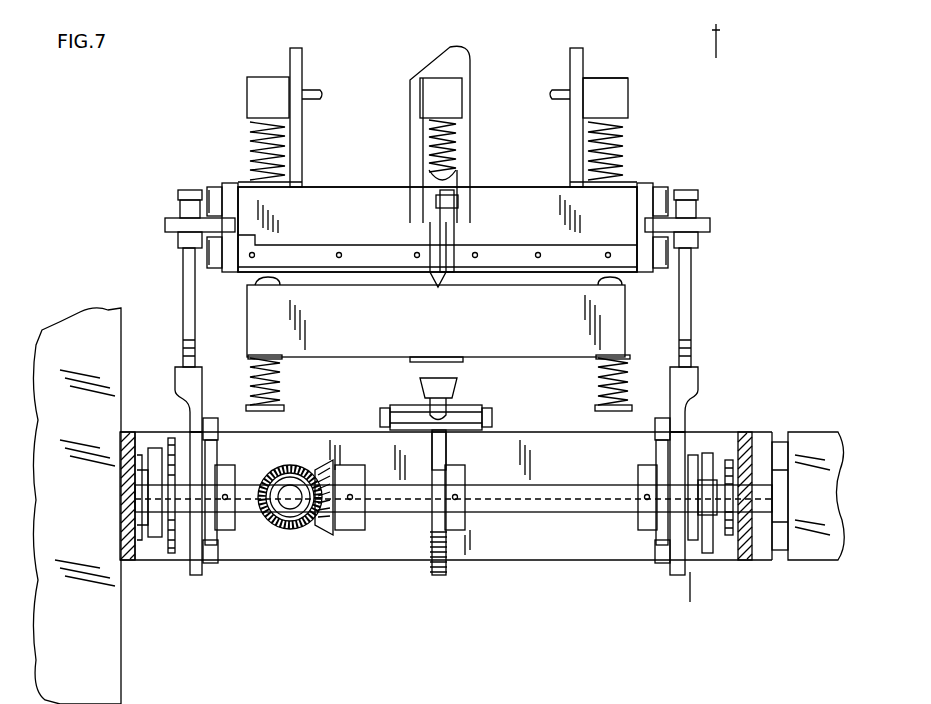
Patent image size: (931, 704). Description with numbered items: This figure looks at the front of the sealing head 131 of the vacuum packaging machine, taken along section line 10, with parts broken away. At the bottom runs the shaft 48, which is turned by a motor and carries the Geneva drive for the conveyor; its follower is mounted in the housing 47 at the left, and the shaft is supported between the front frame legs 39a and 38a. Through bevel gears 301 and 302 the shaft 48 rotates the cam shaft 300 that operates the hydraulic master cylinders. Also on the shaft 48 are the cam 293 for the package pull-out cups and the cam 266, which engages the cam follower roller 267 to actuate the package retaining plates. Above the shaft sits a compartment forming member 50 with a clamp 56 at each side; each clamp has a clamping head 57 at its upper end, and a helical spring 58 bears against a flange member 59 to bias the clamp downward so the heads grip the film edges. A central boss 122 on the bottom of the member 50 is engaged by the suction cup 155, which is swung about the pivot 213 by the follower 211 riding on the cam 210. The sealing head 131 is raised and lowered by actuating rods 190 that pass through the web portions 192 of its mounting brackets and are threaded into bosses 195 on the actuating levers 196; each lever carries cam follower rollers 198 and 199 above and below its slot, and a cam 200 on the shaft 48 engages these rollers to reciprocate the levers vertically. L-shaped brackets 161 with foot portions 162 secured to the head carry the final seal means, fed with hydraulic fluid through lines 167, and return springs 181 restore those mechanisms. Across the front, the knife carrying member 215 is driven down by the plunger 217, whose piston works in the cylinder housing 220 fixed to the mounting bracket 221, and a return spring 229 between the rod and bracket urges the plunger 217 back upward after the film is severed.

The section line 10 is at (711, 33).
The housing 47 is at (120, 686).
The shaft 48 is at (565, 463).
The compartment forming member 50 is at (348, 363).
The clamp 56 is at (280, 362).
The clamping head 57 is at (255, 282).
The helical spring 58 is at (278, 390).
The flange member 59 is at (285, 408).
The central boss 122 is at (463, 362).
The sealing head 131 is at (648, 161).
The suction cup 155 is at (420, 385).
The L-shaped bracket 161 is at (302, 126).
The foot portion 162 is at (240, 182).
The line 167 is at (310, 92).
The return spring 181 is at (250, 150).
The actuating rod 190 is at (183, 296).
The central web portion 192 is at (165, 225).
The internally threaded boss 195 is at (178, 385).
The actuating lever 196 is at (198, 575).
The cam follower roller 198 is at (218, 425).
The cam follower roller 199 is at (218, 550).
The cam 200 is at (217, 448).
The cam 210 is at (440, 578).
The follower 211 is at (449, 432).
The pivot 213 is at (492, 415).
The knife carrying member 215 is at (302, 257).
The plunger 217 is at (455, 148).
The cylinder housing 220 is at (420, 97).
The mounting bracket 221 is at (470, 70).
The return spring 229 is at (429, 145).
The cam 266 is at (708, 453).
The cam follower roller 267 is at (711, 550).
The cam 293 is at (155, 540).
The cam shaft 300 is at (292, 522).
The bevel gear 301 is at (335, 530).
The bevel gear 302 is at (315, 468).
The leg 39a is at (130, 560).
The leg 38a is at (745, 560).